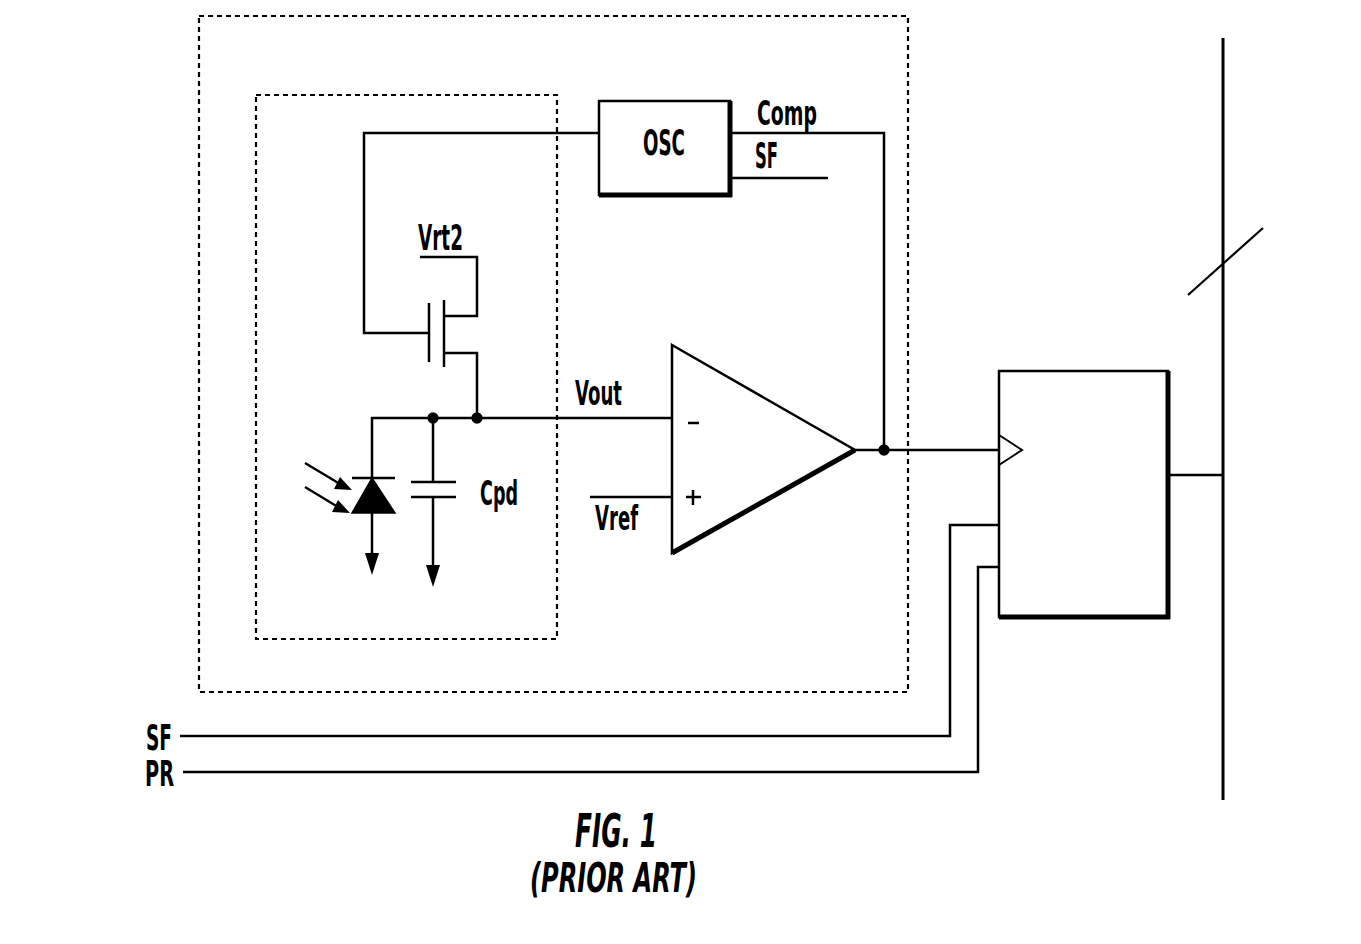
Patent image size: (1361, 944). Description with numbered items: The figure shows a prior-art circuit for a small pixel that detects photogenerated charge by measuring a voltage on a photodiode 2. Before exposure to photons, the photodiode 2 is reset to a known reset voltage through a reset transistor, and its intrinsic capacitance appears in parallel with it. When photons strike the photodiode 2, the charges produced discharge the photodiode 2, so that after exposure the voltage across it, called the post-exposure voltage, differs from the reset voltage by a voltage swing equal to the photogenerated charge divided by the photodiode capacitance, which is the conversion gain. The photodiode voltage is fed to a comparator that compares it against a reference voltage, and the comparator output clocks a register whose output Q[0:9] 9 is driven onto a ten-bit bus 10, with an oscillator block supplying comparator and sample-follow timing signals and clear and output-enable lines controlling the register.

The photodiode 2 is at (348, 519).
The output register Q[0:9] 9 is at (1111, 495).
The 10 bit bus 10 is at (1260, 419).